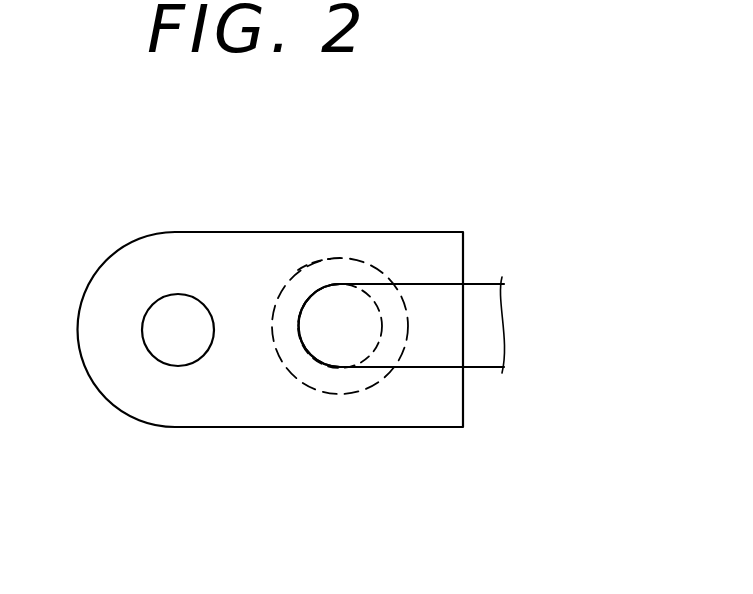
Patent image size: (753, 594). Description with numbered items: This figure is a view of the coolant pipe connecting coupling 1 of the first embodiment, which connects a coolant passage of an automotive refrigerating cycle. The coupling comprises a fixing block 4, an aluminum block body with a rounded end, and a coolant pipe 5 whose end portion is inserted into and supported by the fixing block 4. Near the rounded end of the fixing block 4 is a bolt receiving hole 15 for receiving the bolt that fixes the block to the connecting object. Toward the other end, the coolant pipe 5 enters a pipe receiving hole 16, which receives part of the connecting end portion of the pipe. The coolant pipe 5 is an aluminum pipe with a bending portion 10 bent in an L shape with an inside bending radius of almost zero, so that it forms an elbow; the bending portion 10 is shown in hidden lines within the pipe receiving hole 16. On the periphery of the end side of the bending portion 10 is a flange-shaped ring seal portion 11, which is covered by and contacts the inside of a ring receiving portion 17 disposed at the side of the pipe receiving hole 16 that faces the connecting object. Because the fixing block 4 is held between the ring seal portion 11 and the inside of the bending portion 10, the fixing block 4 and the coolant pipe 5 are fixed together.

The coolant pipe connecting coupling 1 is at (147, 446).
The fixing block 4 is at (93, 345).
The coolant pipe 5 is at (493, 284).
The bending portion 10 is at (338, 354).
The ring seal portion 11 is at (350, 259).
The bolt receiving hole 15 is at (145, 324).
The pipe receiving hole 16 is at (300, 334).
The ring receiving portion 17 is at (300, 270).